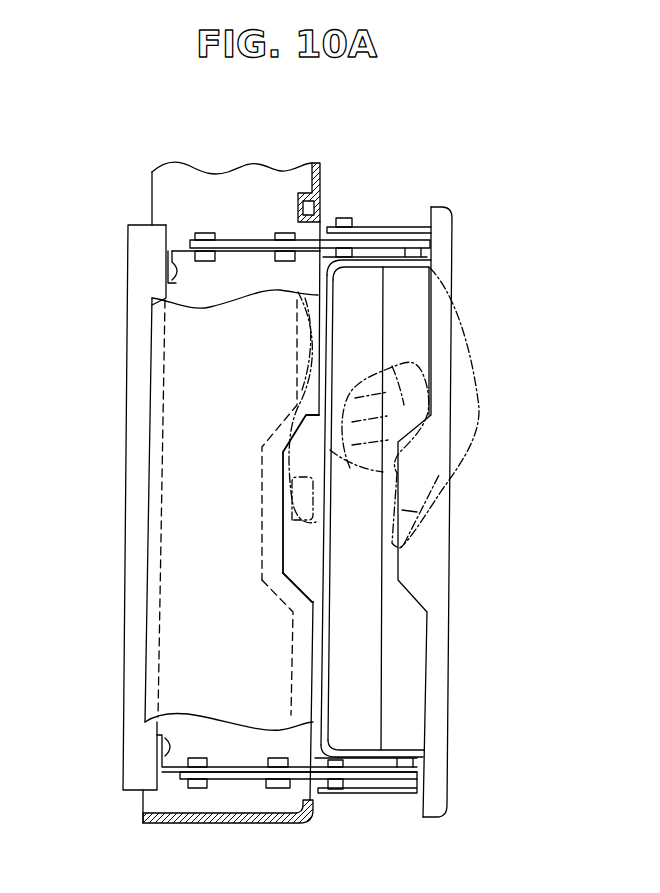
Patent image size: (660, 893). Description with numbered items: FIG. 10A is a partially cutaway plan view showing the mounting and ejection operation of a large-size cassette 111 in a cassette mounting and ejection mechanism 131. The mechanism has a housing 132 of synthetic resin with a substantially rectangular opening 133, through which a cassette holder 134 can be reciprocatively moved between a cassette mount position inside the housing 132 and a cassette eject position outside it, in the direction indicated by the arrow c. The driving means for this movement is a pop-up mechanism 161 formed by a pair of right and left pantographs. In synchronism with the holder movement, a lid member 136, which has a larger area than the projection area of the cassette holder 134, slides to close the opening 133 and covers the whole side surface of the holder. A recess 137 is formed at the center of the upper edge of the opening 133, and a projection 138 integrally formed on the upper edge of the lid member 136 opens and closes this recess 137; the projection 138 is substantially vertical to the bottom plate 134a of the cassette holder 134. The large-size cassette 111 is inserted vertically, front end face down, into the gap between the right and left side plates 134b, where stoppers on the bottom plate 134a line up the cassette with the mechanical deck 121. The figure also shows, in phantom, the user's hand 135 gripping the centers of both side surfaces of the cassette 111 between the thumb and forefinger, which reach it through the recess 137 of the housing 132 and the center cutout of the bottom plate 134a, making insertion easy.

The large-size cassette 111 is at (350, 509).
The mechanical deck 121 is at (138, 414).
The cassette mounting and ejection mechanism 131 is at (455, 638).
The housing 132 is at (215, 352).
The opening 133 is at (305, 273).
The cassette holder 134 is at (310, 575).
The bottom plate 134a is at (312, 607).
The side plates 134b is at (407, 755).
The hand 135 is at (396, 455).
The lid member 136 is at (440, 337).
The recess 137 is at (293, 521).
The projection 138 is at (417, 512).
The pop-up mechanism 161 is at (221, 232).
The arrow c is at (470, 508).